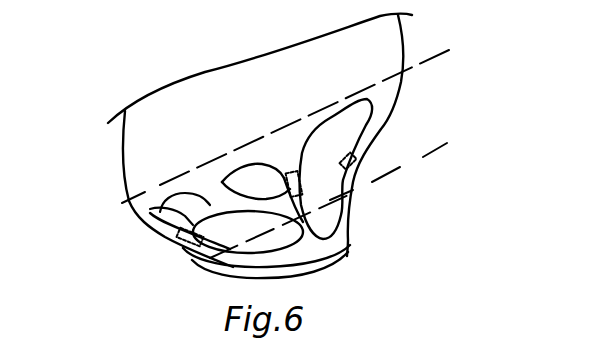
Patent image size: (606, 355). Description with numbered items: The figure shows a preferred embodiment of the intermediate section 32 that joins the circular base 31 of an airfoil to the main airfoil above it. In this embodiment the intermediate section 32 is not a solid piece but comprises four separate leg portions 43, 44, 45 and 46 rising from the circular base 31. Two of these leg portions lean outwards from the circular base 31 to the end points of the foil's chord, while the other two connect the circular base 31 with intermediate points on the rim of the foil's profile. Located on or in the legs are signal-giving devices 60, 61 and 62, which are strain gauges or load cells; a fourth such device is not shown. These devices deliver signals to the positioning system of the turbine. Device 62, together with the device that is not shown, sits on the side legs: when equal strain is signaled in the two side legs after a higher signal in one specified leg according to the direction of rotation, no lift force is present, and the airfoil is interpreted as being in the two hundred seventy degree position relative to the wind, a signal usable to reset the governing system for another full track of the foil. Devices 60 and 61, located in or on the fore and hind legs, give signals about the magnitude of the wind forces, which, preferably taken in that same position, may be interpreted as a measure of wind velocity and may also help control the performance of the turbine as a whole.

The circular base 31 is at (342, 256).
The intermediate section 32 is at (451, 48).
The leg portion 43 is at (158, 228).
The leg portion 44 is at (381, 125).
The leg portion 45 is at (206, 190).
The leg portion 46 is at (312, 221).
The signal-giving device 60 is at (174, 245).
The signal-giving device 61 is at (358, 162).
The signal-giving device 62 is at (292, 168).